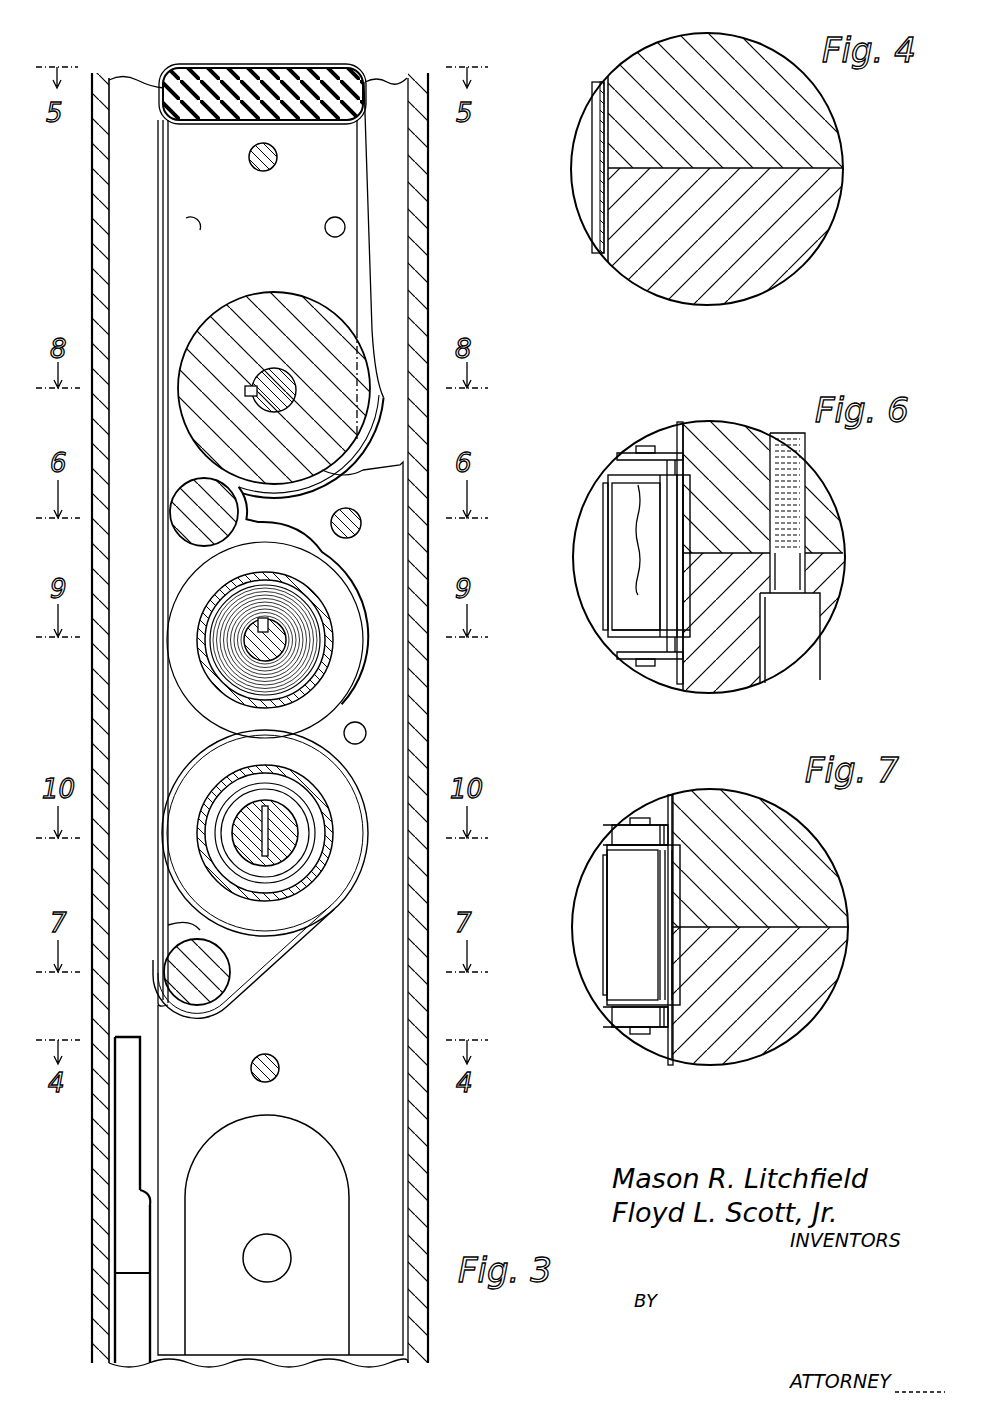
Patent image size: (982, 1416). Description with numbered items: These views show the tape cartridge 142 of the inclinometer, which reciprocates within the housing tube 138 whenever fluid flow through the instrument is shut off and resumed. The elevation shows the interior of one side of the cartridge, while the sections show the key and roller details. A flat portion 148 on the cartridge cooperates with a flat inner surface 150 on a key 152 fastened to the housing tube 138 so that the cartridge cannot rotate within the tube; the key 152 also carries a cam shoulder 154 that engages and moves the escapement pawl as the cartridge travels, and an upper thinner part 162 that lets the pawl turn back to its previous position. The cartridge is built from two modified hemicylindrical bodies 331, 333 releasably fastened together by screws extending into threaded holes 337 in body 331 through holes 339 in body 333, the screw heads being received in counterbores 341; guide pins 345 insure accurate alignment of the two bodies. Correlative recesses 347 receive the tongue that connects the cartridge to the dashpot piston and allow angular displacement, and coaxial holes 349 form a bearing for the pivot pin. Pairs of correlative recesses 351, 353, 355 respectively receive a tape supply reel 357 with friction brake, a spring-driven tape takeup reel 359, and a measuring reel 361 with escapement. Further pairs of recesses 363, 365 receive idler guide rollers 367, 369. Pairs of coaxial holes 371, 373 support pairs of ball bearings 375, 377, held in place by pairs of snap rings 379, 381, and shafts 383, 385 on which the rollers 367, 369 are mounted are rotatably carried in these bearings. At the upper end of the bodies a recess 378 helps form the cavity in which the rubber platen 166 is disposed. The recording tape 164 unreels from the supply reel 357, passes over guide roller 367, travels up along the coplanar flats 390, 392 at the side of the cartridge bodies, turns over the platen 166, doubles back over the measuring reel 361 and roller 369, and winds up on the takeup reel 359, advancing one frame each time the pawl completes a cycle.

In FIG. 3, the housing tube 138 is at (428, 998).
In FIG. 3, the cartridge 142 is at (416, 697).
In FIG. 4, the flat portion 148 is at (605, 255).
In FIG. 3, the flat inner surface 150 is at (135, 1275).
In FIG. 4, the flat inner surface 150 is at (606, 112).
In FIG. 3, the key 152 is at (135, 1216).
In FIG. 4, the key 152 is at (597, 135).
In FIG. 3, the cam shoulder 154 is at (138, 1194).
In FIG. 4, the cam shoulder 154 is at (598, 153).
In FIG. 3, the upper thinner part 162 is at (124, 1126).
In FIG. 4, the upper thinner part 162 is at (585, 125).
In FIG. 3, the recording tape 164 is at (378, 228).
In FIG. 6, the recording tape 164 is at (618, 544).
In FIG. 7, the recording tape 164 is at (612, 890).
In FIG. 3, the platen 166 is at (418, 110).
In FIG. 3, the hemicylindrical body 331 is at (360, 172).
In FIG. 6, the hemicylindrical body 331 is at (735, 422).
In FIG. 7, the hemicylindrical body 331 is at (730, 800).
In FIG. 6, the hemicylindrical body 333 is at (725, 675).
In FIG. 7, the hemicylindrical body 333 is at (728, 1050).
In FIG. 3, the threaded holes 337 is at (278, 157).
In FIG. 6, the threaded holes 337 is at (800, 488).
In FIG. 6, the holes 339 is at (805, 578).
In FIG. 6, the counterbores 341 is at (812, 618).
In FIG. 3, the guide pins 345 is at (325, 228).
In FIG. 3, the recesses 347 is at (290, 1125).
In FIG. 3, the coaxial holes 349 is at (268, 1280).
In FIG. 3, the recesses 351 is at (345, 780).
In FIG. 3, the recesses 353 is at (340, 575).
In FIG. 3, the recesses 355 is at (403, 480).
In FIG. 3, the tape supply reel 357 is at (205, 802).
In FIG. 3, the tape takeup reel 359 is at (200, 615).
In FIG. 3, the measuring reel 361 is at (372, 340).
In FIG. 3, the recesses 363 is at (178, 925).
In FIG. 7, the recesses 363 is at (680, 893).
In FIG. 3, the recesses 365 is at (170, 478).
In FIG. 6, the recesses 365 is at (640, 503).
In FIG. 3, the idler guide roller 367 is at (180, 968).
In FIG. 7, the idler guide roller 367 is at (628, 918).
In FIG. 3, the idler guide roller 369 is at (190, 498).
In FIG. 6, the idler guide roller 369 is at (646, 557).
In FIG. 7, the coaxial holes 371 is at (653, 798).
In FIG. 6, the coaxial holes 373 is at (668, 420).
In FIG. 7, the ball bearings 375 is at (612, 835).
In FIG. 6, the ball bearings 377 is at (630, 452).
In FIG. 3, the recess 378 is at (168, 118).
In FIG. 7, the snap rings 379 is at (640, 818).
In FIG. 6, the snap rings 381 is at (645, 446).
In FIG. 7, the shaft 383 is at (636, 1040).
In FIG. 6, the shaft 385 is at (650, 668).
In FIG. 6, the flat 390 is at (620, 633).
In FIG. 3, the flat 392 is at (168, 580).
In FIG. 6, the flat 392 is at (608, 476).